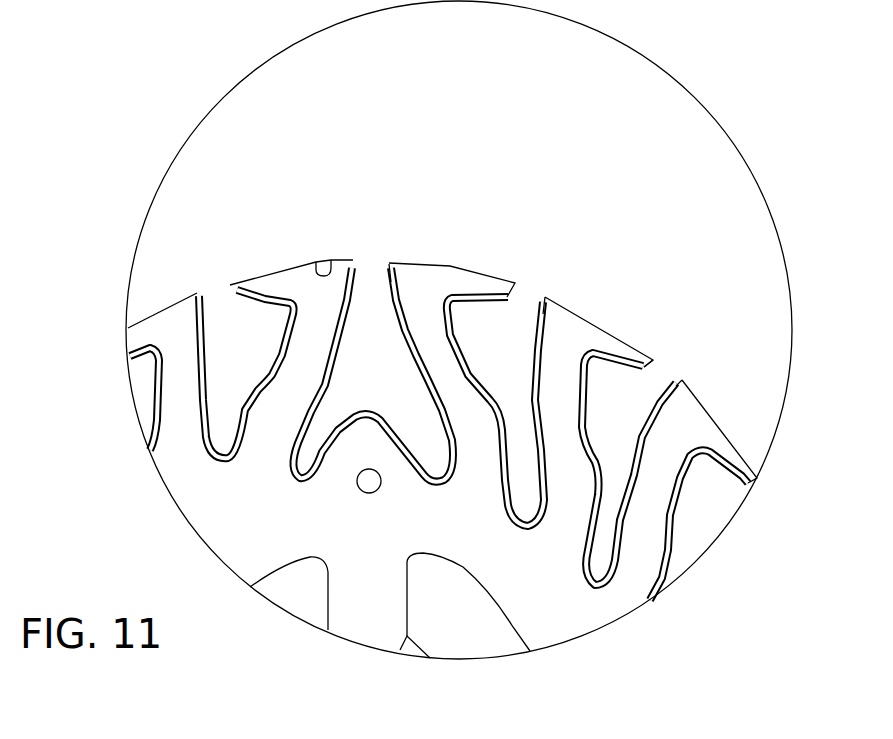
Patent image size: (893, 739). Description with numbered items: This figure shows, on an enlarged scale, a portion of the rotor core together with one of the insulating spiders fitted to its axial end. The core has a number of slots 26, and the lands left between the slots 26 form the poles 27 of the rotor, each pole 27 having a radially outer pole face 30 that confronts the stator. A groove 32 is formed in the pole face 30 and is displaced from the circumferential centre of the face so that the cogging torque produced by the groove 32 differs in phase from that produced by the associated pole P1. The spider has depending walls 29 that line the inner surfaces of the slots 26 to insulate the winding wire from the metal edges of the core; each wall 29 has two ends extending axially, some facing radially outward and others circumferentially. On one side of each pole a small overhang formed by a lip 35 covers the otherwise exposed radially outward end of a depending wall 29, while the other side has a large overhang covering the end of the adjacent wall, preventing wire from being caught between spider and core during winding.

The slot 26 is at (647, 383).
The pole 27 is at (439, 278).
The depending wall 29 is at (388, 288).
The pole face 30 is at (603, 322).
The groove 32 is at (323, 265).
The lip 35 is at (397, 265).
The pole P1 is at (268, 280).